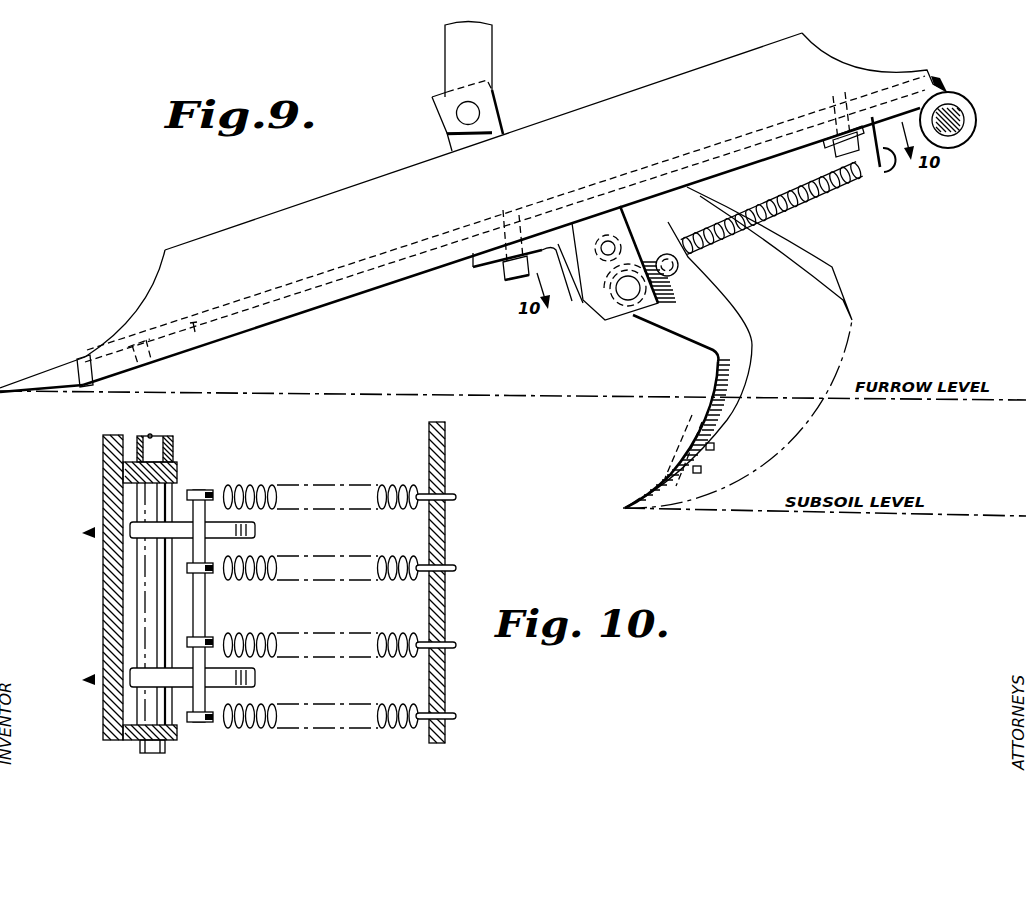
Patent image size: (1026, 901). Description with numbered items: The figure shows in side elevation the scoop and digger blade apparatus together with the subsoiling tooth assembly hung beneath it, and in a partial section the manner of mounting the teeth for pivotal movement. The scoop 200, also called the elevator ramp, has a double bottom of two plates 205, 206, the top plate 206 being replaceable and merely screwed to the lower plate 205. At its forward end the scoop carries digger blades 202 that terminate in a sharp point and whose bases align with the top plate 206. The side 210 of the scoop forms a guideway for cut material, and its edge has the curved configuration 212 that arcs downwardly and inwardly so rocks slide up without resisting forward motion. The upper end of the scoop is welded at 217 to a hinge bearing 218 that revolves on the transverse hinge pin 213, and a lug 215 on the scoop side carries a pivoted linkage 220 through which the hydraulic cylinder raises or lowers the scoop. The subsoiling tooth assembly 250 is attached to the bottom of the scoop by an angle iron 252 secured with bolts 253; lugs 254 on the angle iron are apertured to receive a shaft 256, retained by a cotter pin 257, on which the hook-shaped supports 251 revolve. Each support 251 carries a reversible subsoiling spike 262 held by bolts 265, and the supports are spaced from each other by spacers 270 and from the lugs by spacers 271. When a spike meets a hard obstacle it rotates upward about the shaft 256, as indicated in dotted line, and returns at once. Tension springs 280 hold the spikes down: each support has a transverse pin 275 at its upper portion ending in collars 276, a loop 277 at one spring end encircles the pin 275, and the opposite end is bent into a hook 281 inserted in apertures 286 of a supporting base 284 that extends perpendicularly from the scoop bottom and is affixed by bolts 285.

In FIG. 9, the scoop 200 is at (245, 221).
In FIG. 9, the digger blades 202 is at (30, 377).
In FIG. 9, the plate 205 is at (282, 312).
In FIG. 9, the top plate 206 is at (344, 296).
In FIG. 9, the side 210 is at (402, 178).
In FIG. 9, the curved side configuration 212 is at (146, 289).
In FIG. 9, the hinge pin 213 is at (957, 107).
In FIG. 9, the lug 215 is at (503, 117).
In FIG. 9, the weld 217 is at (943, 87).
In FIG. 9, the hinge bearing 218 is at (970, 123).
In FIG. 9, the pivoted linkage 220 is at (480, 52).
In FIG. 9, the subsoiling tooth assembly 250 is at (744, 316).
In FIG. 9, the support 251 is at (681, 332).
In FIG. 10, the support 251 is at (257, 532).
In FIG. 9, the angle iron 252 is at (473, 267).
In FIG. 10, the angle iron 252 is at (102, 587).
In FIG. 9, the bolts 253 is at (503, 217).
In FIG. 9, the lug 254 is at (605, 320).
In FIG. 10, the lug 254 is at (177, 465).
In FIG. 9, the shaft 256 is at (628, 312).
In FIG. 10, the shaft 256 is at (152, 434).
In FIG. 9, the cotter pin 257 is at (583, 303).
In FIG. 10, the cotter pin 257 is at (170, 743).
In FIG. 9, the subsoiling spikes 262 is at (658, 477).
In FIG. 10, the subsoiling spikes 262 is at (86, 536).
In FIG. 9, the bolts 265 is at (716, 446).
In FIG. 10, the spacers 270 is at (148, 622).
In FIG. 10, the spacers 271 is at (143, 502).
In FIG. 9, the transverse pin 275 is at (668, 289).
In FIG. 10, the transverse pin 275 is at (212, 547).
In FIG. 9, the collars 276 is at (676, 276).
In FIG. 10, the collars 276 is at (203, 490).
In FIG. 10, the loop 277 is at (215, 493).
In FIG. 9, the tension springs 280 is at (797, 187).
In FIG. 10, the tension springs 280 is at (270, 484).
In FIG. 9, the hook 281 is at (883, 173).
In FIG. 10, the hook 281 is at (456, 500).
In FIG. 9, the supporting base 284 is at (823, 138).
In FIG. 10, the supporting base 284 is at (445, 453).
In FIG. 9, the bolts 285 is at (835, 107).
In FIG. 10, the apertures 286 is at (446, 497).